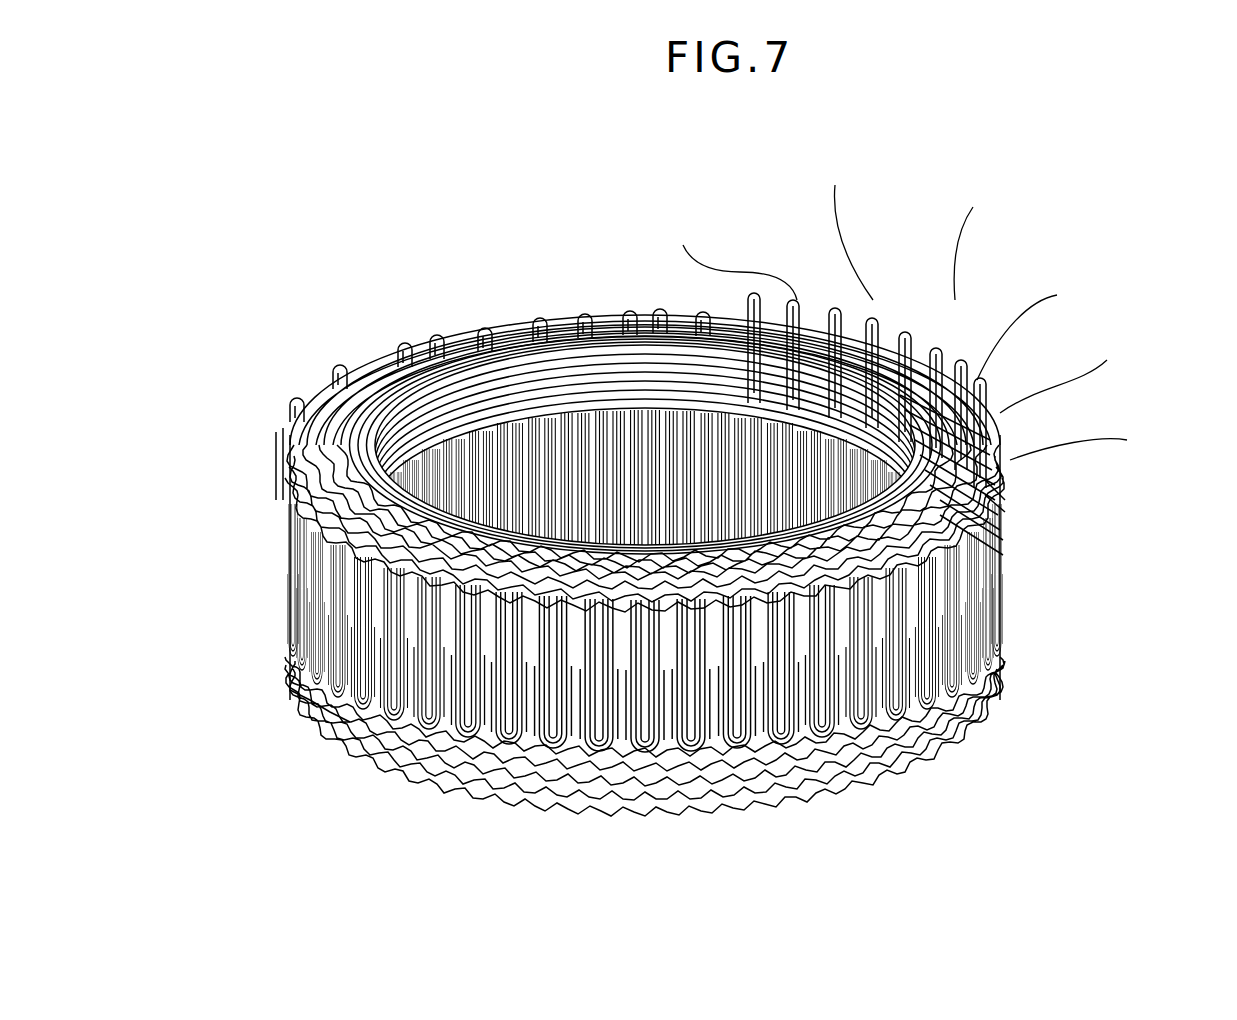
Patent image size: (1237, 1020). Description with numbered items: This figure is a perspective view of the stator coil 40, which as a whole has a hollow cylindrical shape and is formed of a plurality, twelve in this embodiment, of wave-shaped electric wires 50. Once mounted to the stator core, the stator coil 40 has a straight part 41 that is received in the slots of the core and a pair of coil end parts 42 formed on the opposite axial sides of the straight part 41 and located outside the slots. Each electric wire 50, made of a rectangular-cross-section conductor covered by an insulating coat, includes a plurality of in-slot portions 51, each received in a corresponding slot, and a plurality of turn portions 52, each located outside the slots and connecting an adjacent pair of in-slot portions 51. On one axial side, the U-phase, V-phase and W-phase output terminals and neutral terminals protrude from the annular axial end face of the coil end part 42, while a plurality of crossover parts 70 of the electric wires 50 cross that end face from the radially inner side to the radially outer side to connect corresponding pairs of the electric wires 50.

The stator coil 40 is at (348, 244).
The straight part 41 is at (938, 650).
The coil end part 42 is at (1003, 487).
The electric wire 50 is at (280, 590).
The in-slot portion 51 is at (305, 688).
The turn portion 52 is at (300, 618).
The crossover part 70 is at (1005, 560).